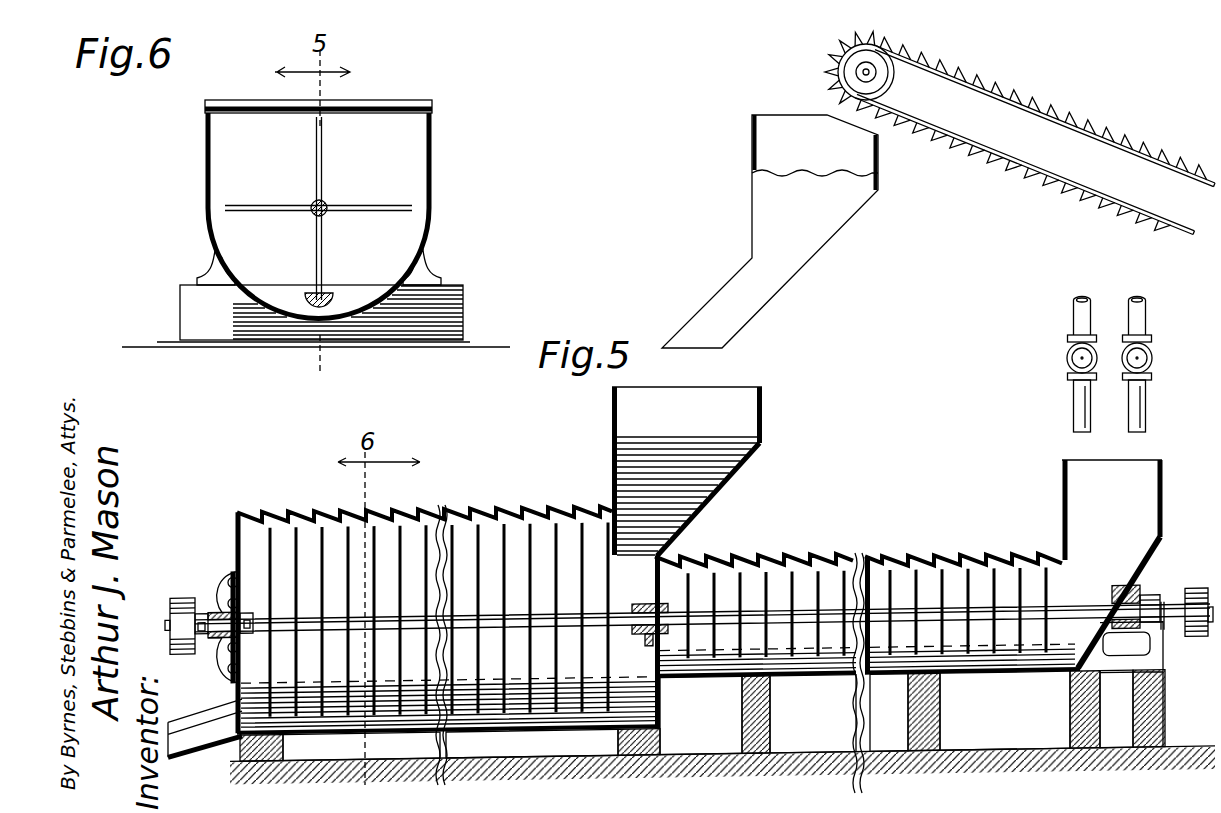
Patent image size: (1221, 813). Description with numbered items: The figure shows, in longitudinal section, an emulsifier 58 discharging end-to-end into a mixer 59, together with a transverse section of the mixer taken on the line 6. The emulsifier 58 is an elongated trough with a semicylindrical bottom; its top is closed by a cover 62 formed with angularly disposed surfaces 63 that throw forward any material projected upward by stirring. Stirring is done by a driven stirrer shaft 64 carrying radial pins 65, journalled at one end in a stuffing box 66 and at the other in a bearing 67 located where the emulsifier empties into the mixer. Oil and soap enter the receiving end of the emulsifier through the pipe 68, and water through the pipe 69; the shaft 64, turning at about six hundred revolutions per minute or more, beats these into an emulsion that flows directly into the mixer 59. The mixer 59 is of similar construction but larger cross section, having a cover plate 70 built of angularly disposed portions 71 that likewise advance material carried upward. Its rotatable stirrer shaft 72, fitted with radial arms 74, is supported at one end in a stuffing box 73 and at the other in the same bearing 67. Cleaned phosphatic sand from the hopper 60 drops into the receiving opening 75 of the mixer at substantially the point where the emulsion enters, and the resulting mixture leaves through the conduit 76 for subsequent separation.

In FIG. 5, the section line 6 is at (1032, 98).
In FIG. 5, the emulsifier 58 is at (980, 662).
In FIG. 6, the mixer 59 is at (222, 233).
In FIG. 5, the mixer 59 is at (517, 705).
In FIG. 5, the hopper 60 is at (837, 215).
In FIG. 5, the cover 62 is at (808, 553).
In FIG. 5, the angularly disposed surfaces 63 is at (945, 553).
In FIG. 5, the stirrer shaft 64 is at (1080, 607).
In FIG. 5, the radial pins 65 is at (1045, 555).
In FIG. 5, the stuffing box 66 is at (1137, 593).
In FIG. 5, the bearing 67 is at (655, 603).
In FIG. 5, the pipe 68 is at (1140, 397).
In FIG. 5, the pipe 69 is at (1080, 399).
In FIG. 6, the cover plate 70 is at (386, 105).
In FIG. 5, the cover plate 70 is at (556, 490).
In FIG. 5, the angularly disposed portions 71 is at (477, 512).
In FIG. 5, the stirrer shaft 72 is at (610, 607).
In FIG. 5, the stuffing box 73 is at (216, 642).
In FIG. 5, the radial arms 74 is at (323, 524).
In FIG. 5, the receiving opening 75 is at (742, 417).
In FIG. 6, the conduit 76 is at (313, 312).
In FIG. 5, the conduit 76 is at (195, 730).